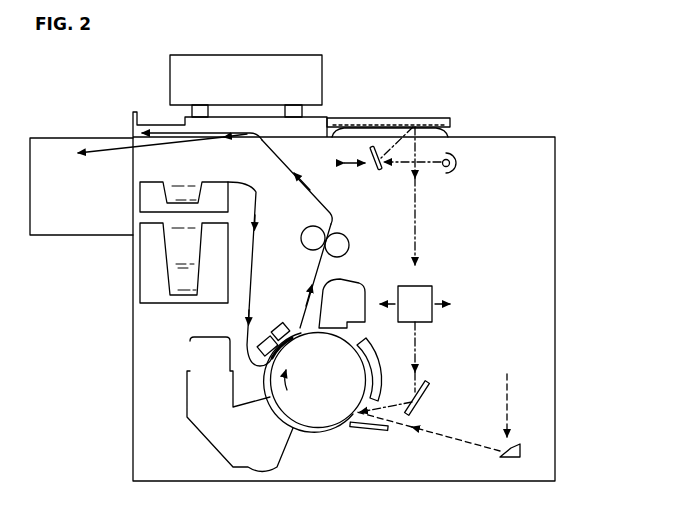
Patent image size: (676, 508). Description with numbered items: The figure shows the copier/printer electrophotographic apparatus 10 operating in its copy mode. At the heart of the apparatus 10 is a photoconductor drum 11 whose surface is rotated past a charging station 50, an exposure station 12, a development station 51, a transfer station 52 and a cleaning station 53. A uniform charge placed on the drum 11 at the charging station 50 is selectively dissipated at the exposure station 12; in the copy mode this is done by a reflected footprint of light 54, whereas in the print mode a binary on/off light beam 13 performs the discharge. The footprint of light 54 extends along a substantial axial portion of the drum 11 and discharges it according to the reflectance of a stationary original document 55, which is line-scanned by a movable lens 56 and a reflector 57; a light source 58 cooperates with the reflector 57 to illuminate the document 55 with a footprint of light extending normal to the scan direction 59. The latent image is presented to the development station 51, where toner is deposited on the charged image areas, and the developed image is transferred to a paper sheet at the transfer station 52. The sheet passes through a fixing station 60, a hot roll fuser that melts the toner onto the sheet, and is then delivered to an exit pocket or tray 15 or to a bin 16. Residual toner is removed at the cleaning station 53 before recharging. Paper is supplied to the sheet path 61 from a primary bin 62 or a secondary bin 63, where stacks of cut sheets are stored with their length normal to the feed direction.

The copier/printer electrophotographic apparatus 10 is at (558, 237).
The photoconductor drum 11 is at (315, 383).
The exposure station 12 is at (361, 431).
The light beam 13 is at (439, 437).
The exit pocket or tray 15 is at (152, 117).
The bin 16 is at (73, 143).
The charging station 50 is at (371, 361).
The development station 51 is at (255, 451).
The transfer station 52 is at (271, 330).
The cleaning station 53 is at (352, 313).
The reflected footprint of light 54 is at (419, 364).
The original document 55 is at (377, 118).
The movable lens 56 is at (424, 287).
The reflector 57 is at (372, 168).
The light source 58 is at (450, 174).
The scan direction 59 is at (354, 161).
The fixing station 60 is at (323, 223).
The sheet path 61 is at (256, 258).
The primary bin 62 is at (153, 297).
The secondary bin 63 is at (157, 190).